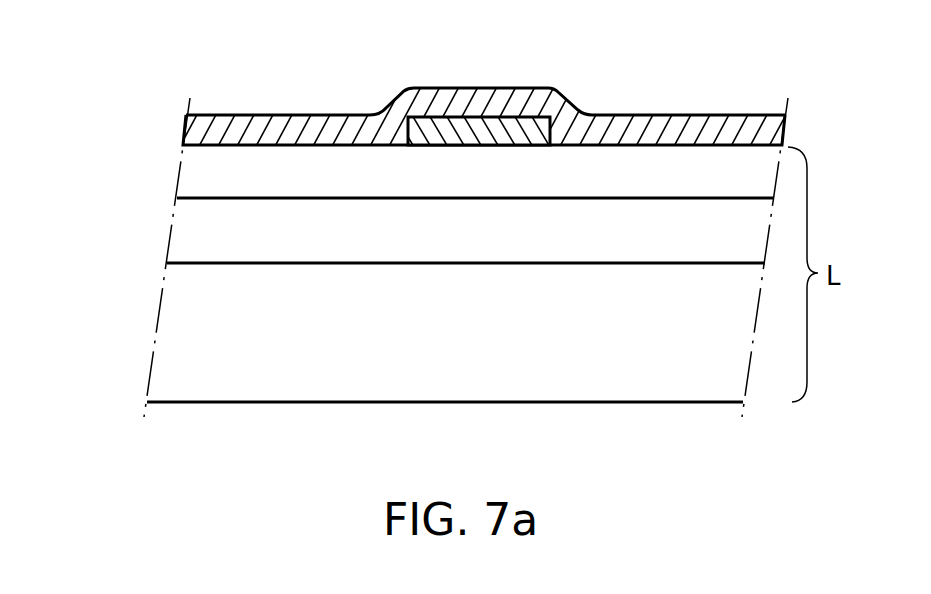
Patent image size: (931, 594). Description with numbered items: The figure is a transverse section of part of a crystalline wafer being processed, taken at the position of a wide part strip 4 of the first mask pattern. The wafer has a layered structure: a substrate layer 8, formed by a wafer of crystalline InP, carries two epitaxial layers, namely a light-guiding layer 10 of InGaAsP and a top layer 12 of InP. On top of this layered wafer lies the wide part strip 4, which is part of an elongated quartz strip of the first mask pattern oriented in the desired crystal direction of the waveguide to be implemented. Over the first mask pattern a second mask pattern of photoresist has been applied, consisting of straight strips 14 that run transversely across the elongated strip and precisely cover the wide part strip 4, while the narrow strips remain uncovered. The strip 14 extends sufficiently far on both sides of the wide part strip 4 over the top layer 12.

The straight strip 14 is at (352, 117).
The wide part strip 4 is at (534, 117).
The top layer 12 is at (215, 177).
The light-guiding layer 10 is at (218, 232).
The substrate layer 8 is at (215, 300).